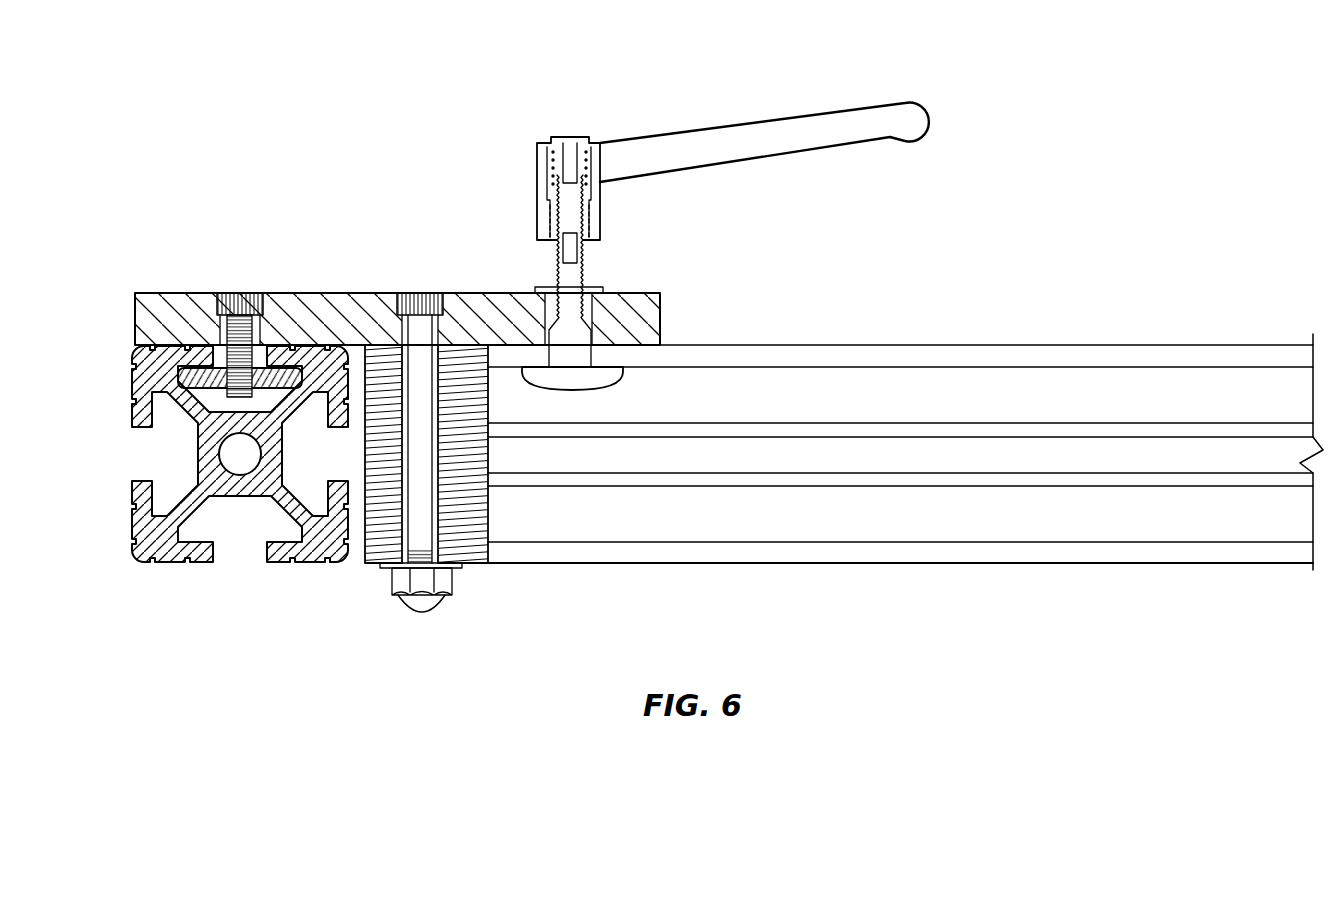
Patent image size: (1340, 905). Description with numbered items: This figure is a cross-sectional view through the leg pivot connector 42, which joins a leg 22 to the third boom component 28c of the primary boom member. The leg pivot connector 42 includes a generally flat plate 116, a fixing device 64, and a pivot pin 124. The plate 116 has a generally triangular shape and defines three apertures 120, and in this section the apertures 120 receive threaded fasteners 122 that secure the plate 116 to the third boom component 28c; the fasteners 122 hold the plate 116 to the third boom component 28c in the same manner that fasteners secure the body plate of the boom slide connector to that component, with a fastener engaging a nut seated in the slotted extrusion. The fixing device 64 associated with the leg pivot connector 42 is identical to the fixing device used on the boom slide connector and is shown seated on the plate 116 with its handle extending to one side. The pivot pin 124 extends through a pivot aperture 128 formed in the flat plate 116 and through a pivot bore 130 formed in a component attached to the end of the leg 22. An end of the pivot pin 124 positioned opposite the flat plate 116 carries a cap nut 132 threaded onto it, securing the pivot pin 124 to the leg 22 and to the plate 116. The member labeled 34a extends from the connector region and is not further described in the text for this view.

The leg 22 is at (813, 580).
The third boom component 28c is at (137, 490).
The table top panel 34a is at (1130, 565).
The leg pivot connector 42 is at (345, 278).
The fixing device 64 is at (714, 98).
The flat plate 116 is at (640, 298).
The apertures 120 is at (252, 298).
The threaded fasteners 122 is at (233, 297).
The pivot pin 124 is at (422, 495).
The pivot aperture 128 is at (432, 298).
The pivot bore 130 is at (430, 523).
The cap nut 132 is at (425, 613).